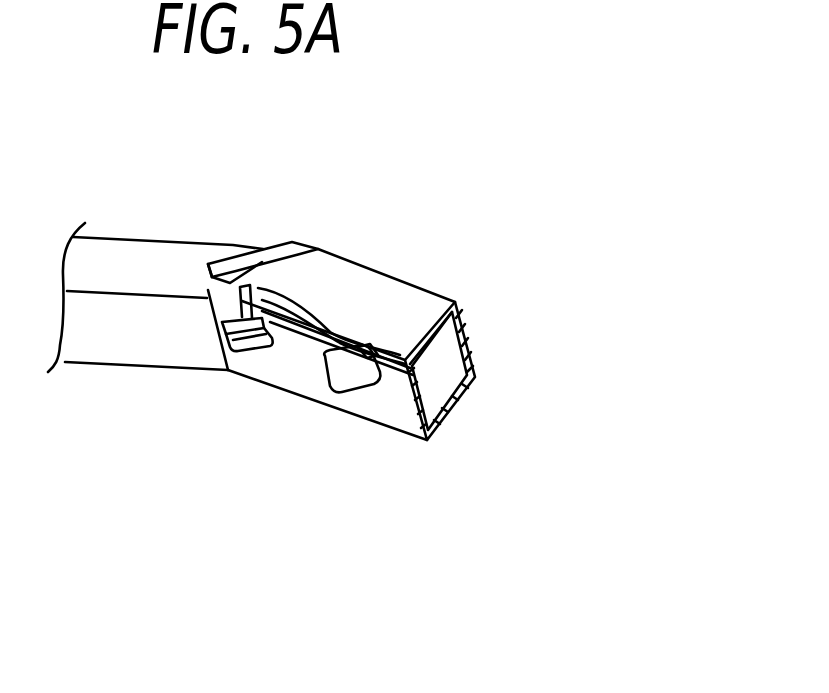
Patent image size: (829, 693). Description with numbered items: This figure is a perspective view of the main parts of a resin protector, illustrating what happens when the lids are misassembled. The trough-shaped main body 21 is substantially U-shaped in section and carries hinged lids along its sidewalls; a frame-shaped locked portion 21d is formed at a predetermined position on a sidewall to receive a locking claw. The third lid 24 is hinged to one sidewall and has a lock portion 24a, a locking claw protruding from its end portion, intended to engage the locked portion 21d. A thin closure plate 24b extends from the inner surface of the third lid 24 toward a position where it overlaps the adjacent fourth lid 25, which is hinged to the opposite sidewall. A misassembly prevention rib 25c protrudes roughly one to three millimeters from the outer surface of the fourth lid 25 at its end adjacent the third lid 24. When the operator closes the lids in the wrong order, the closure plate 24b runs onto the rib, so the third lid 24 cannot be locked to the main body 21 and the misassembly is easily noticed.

The main body 21 is at (405, 433).
The locked portion 21d is at (270, 338).
The third lid 24 is at (350, 277).
The lock portion 24a is at (246, 343).
The thin closure plate 24b is at (235, 252).
The fourth lid 25 is at (135, 253).
The misassembly prevention rib 25c is at (207, 290).